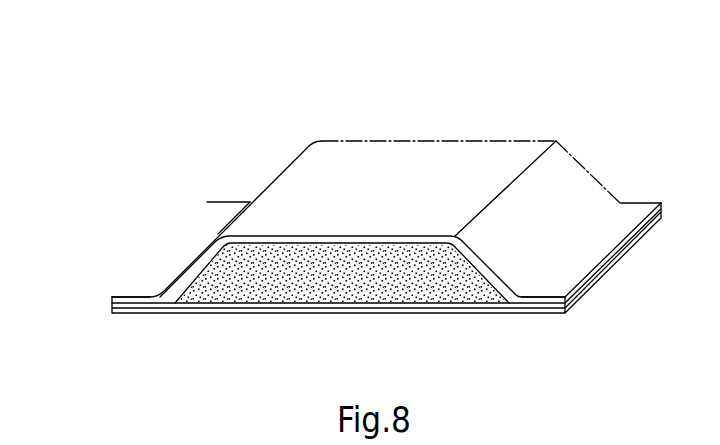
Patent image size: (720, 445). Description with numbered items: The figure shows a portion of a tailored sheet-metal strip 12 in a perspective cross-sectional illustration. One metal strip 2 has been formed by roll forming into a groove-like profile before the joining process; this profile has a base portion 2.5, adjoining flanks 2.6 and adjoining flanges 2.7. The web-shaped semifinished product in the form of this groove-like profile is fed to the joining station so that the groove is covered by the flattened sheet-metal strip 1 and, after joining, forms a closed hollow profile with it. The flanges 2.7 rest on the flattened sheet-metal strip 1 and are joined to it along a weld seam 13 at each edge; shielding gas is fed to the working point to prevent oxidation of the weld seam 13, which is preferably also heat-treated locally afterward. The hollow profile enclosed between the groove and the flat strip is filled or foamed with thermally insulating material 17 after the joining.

The flattened sheet-metal strip 1 is at (483, 310).
The metal strip 2 is at (362, 158).
The base portion 2.5 is at (512, 158).
The flanks 2.6 is at (197, 267).
The flanges 2.7 is at (208, 219).
The tailored sheet-metal strip 12 is at (506, 96).
The weld seam 13 is at (112, 302).
The thermally insulating material 17 is at (232, 299).